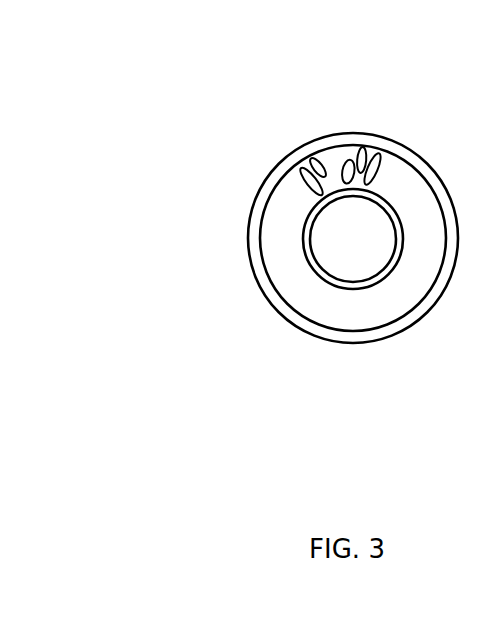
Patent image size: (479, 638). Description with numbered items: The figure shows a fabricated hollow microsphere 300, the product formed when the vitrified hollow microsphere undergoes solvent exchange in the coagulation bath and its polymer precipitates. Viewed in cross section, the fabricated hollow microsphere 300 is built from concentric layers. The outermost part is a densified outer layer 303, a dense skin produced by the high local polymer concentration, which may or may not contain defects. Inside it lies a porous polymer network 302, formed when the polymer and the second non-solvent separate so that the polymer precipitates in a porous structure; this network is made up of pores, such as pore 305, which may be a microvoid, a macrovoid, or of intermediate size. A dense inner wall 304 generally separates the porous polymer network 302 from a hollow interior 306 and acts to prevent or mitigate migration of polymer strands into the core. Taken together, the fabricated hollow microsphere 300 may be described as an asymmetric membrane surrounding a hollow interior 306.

The fabricated hollow microsphere 300 is at (254, 152).
The porous polymer network 302 is at (337, 160).
The densified outer layer 303 is at (263, 283).
The dense inner wall 304 is at (318, 278).
The pore 305 is at (376, 167).
The hollow interior 306 is at (360, 247).